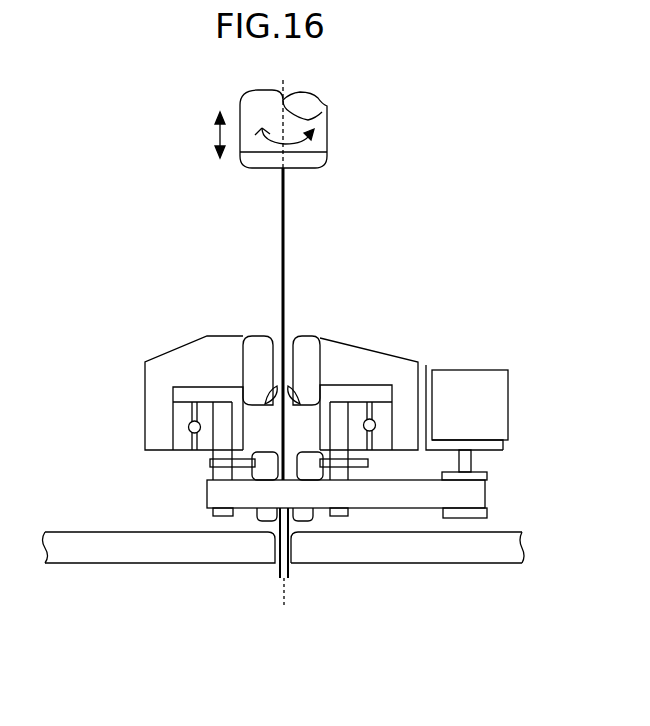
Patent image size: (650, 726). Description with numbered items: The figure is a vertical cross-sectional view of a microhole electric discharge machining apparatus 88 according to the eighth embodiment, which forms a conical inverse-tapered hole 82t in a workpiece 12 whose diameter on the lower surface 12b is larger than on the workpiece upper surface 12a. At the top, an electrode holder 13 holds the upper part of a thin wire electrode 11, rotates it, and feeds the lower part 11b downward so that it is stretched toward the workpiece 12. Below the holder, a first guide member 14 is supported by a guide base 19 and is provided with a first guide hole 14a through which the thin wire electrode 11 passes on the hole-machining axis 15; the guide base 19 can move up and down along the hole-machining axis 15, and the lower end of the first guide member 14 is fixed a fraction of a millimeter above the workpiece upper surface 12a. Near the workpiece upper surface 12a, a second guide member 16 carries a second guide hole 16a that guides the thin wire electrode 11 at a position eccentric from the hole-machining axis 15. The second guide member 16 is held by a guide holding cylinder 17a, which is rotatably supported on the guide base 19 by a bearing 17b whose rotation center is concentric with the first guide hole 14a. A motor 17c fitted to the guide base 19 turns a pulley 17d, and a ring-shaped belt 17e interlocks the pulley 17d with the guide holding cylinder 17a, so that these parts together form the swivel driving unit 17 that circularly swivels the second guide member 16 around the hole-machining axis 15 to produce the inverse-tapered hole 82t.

The electrode holder 13 is at (330, 125).
The microhole electric discharge machining apparatus 88 is at (449, 172).
The thin wire electrode 11 is at (280, 233).
The guide base 19 is at (155, 391).
The swivel driving unit 17 is at (451, 314).
The guide holding cylinder 17a is at (341, 410).
The bearing 17b is at (380, 410).
The first guide member 14 is at (307, 348).
The first guide hole 14a is at (273, 383).
The motor 17c is at (510, 402).
The pulley 17d is at (478, 464).
The ring-shaped belt 17e is at (415, 497).
The second guide member 16 is at (210, 462).
The second guide hole 16a is at (295, 522).
The workpiece 12 is at (284, 549).
The workpiece upper surface 12a is at (72, 532).
The lower surface 12b is at (135, 563).
The lower part 11b is at (291, 570).
The hole-machining axis 15 is at (286, 590).
The conical inverse-tapered hole 82t is at (277, 563).